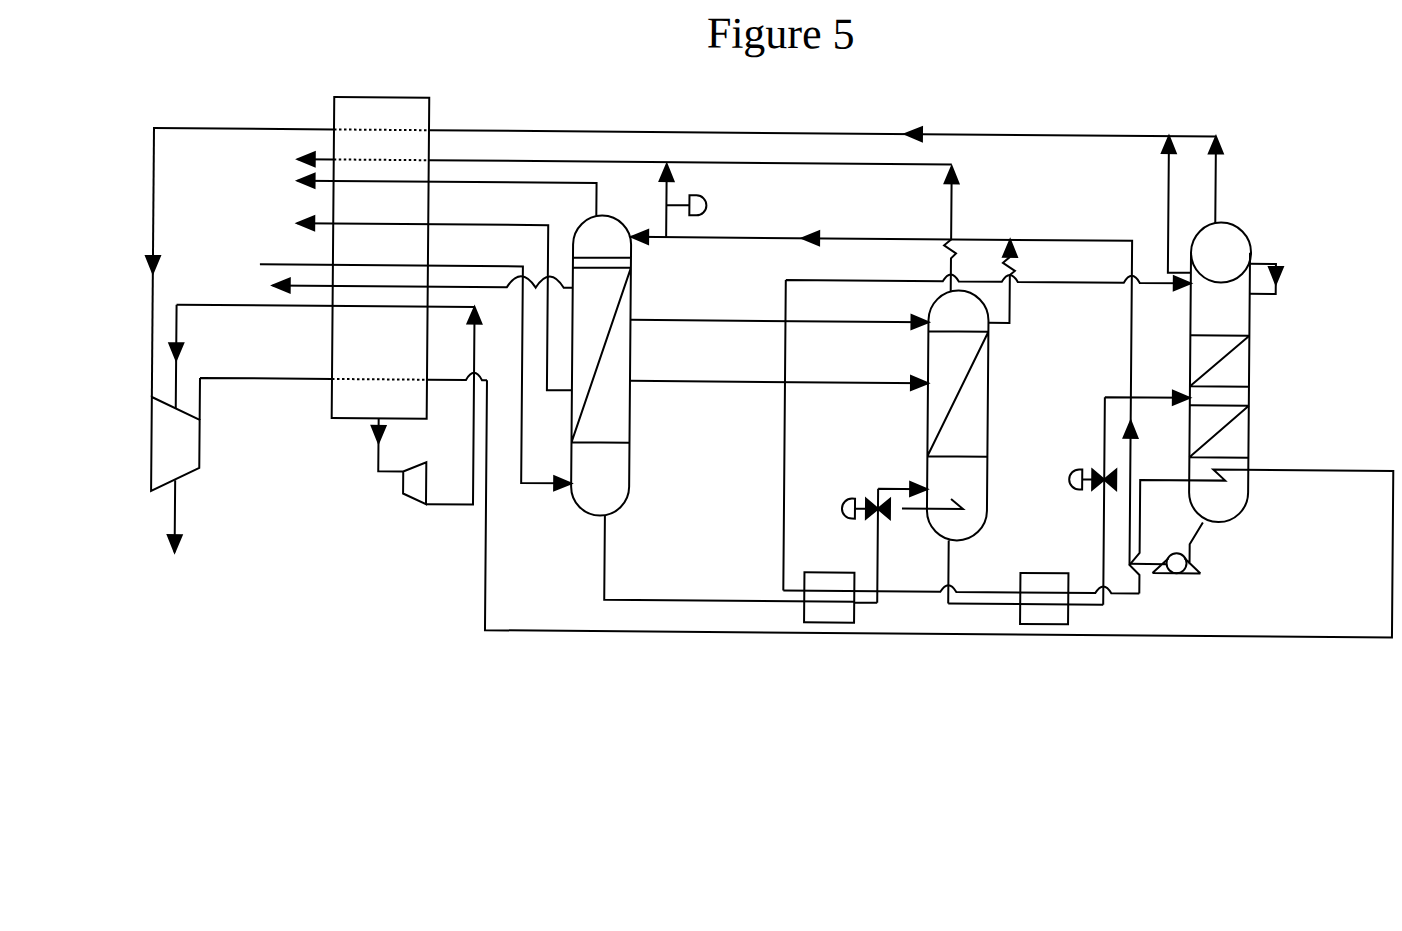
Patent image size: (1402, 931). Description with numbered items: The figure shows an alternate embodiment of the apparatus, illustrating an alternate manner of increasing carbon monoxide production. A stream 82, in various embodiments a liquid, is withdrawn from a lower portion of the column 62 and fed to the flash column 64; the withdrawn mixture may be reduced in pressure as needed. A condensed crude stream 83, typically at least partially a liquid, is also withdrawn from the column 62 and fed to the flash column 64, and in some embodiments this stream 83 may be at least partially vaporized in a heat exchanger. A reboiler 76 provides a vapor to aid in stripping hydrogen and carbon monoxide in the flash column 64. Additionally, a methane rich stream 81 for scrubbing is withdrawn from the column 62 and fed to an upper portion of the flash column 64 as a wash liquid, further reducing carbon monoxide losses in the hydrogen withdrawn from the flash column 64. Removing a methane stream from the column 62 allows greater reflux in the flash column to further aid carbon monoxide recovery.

The column 62 is at (630, 494).
The flash column 64 is at (990, 387).
The reboiler 76 is at (954, 492).
The methane rich stream 81 is at (691, 305).
The stream 82 is at (691, 366).
The condensed crude stream 83 is at (666, 584).